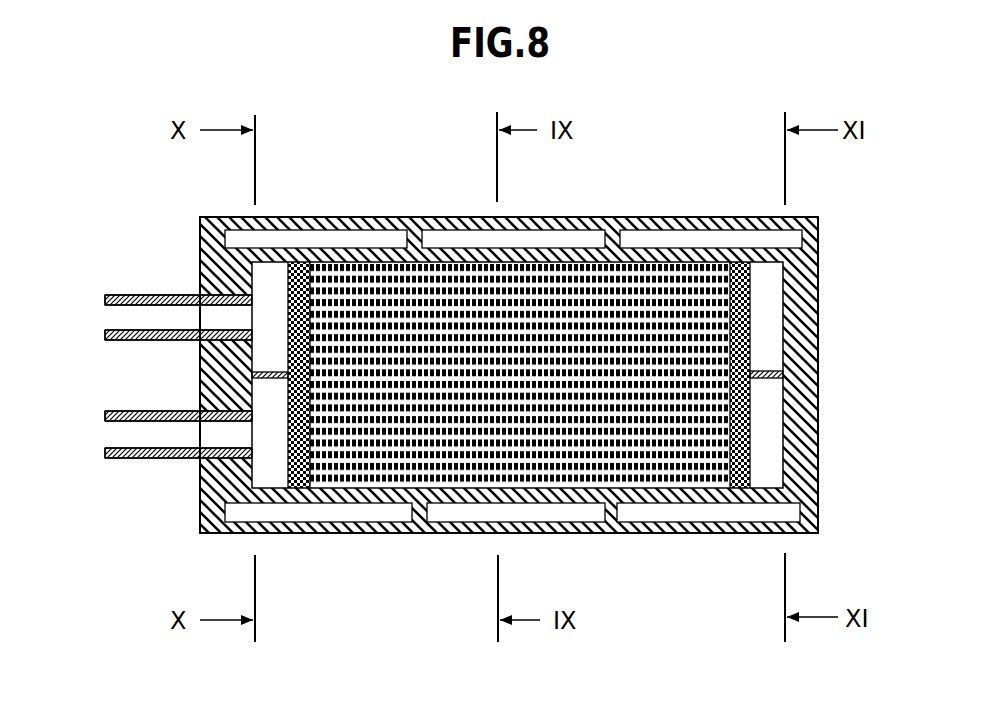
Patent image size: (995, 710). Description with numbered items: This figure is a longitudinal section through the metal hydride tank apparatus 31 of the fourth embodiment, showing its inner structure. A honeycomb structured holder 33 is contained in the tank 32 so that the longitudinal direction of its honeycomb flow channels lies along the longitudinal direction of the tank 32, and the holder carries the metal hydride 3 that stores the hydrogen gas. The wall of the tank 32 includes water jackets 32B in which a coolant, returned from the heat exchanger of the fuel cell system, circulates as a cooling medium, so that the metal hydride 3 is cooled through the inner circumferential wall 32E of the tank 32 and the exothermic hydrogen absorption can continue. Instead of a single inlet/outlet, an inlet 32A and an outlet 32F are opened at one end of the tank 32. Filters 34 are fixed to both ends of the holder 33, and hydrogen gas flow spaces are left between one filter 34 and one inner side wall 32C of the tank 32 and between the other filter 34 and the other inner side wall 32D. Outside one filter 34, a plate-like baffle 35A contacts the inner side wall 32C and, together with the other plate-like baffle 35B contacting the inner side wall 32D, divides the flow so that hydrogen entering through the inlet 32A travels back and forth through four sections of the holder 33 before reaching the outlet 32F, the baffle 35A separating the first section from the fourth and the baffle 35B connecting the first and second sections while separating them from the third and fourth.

The metal hydride 3 is at (408, 428).
The metal hydride tank apparatus 31 is at (639, 182).
The tank 32 is at (359, 215).
The inlet 32A is at (148, 295).
The water jacket 32B is at (278, 240).
The inner side wall 32C is at (200, 468).
The inner side wall 32D is at (787, 432).
The inner circumferential wall 32E is at (730, 232).
The outlet 32F is at (122, 458).
The honeycomb structured holder 33 is at (470, 435).
The filter 34 is at (283, 292).
The plate-like baffle 35A is at (272, 352).
The plate-like baffle 35B is at (775, 371).